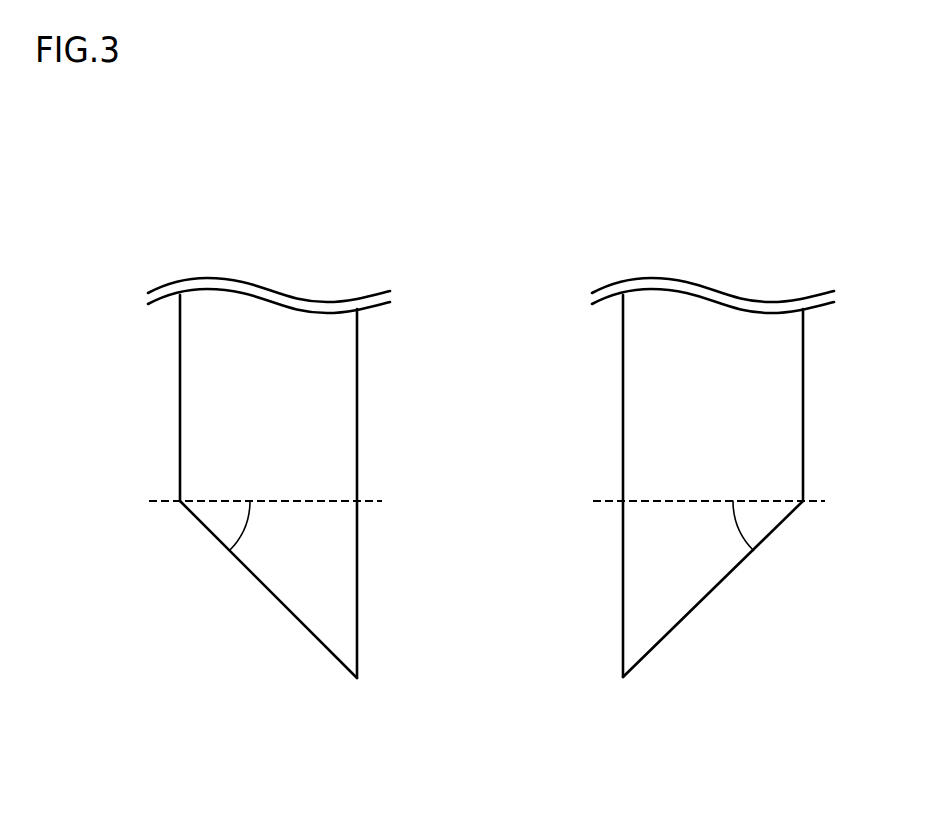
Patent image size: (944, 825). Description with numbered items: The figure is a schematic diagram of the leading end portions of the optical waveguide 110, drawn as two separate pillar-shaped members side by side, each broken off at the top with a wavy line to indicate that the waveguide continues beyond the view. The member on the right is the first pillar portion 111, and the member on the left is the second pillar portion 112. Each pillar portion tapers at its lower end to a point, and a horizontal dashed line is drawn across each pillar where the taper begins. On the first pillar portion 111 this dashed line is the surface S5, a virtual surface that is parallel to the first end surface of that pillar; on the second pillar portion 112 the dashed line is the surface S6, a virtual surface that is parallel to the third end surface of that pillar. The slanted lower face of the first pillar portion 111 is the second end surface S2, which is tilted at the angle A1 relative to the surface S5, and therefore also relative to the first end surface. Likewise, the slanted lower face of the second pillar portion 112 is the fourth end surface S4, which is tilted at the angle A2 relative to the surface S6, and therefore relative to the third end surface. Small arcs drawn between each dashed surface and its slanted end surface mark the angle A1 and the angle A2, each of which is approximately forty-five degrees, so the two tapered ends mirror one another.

The optical waveguide 110 is at (507, 527).
The first pillar portion 111 is at (804, 395).
The second pillar portion 112 is at (358, 395).
The second end surface S2 is at (713, 588).
The fourth end surface S4 is at (260, 585).
The surface S5 is at (608, 500).
The surface S6 is at (367, 500).
The angle A1 is at (726, 526).
The angle A2 is at (260, 526).